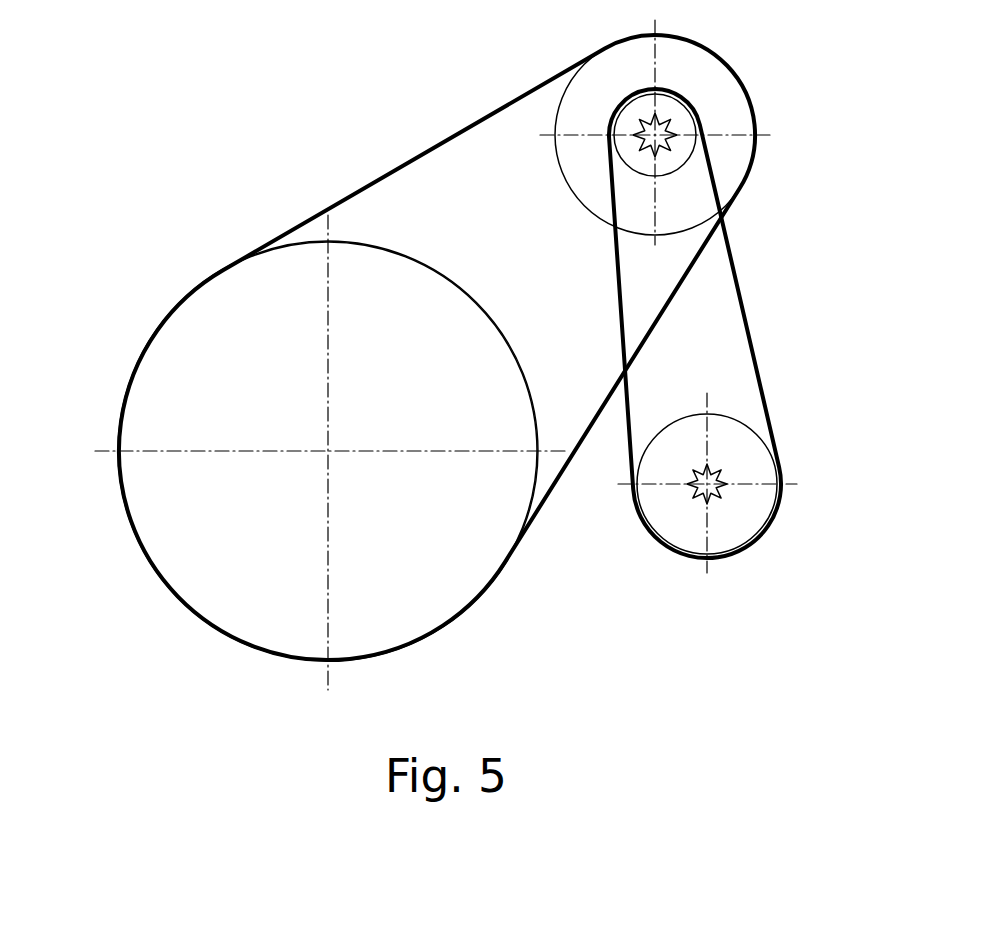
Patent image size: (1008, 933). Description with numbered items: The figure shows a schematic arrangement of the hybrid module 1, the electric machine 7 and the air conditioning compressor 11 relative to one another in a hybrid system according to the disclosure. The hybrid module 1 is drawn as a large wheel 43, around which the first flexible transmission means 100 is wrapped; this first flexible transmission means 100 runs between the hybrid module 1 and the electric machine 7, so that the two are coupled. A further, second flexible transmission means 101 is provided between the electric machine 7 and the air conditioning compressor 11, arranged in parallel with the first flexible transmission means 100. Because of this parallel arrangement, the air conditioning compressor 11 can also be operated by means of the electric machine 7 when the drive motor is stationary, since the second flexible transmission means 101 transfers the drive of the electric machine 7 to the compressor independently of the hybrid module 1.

The hybrid module 1 is at (152, 301).
The wheel 43 is at (228, 343).
The first flexible transmission means 100 is at (458, 133).
The electric machine 7 is at (735, 104).
The second flexible transmission means 101 is at (742, 292).
The air conditioning compressor 11 is at (745, 515).